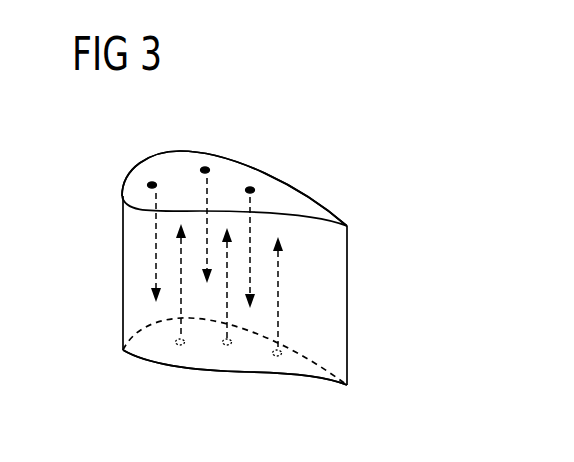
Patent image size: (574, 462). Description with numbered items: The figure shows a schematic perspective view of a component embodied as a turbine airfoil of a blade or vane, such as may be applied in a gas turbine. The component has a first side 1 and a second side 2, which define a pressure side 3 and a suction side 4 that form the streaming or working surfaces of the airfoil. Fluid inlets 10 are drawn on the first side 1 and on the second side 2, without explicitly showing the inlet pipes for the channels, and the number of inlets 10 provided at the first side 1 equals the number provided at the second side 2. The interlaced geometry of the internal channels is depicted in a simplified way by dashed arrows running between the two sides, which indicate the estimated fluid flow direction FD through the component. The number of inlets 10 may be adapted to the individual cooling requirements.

The first side 1 is at (290, 211).
The second side 2 is at (288, 377).
The pressure side 3 is at (248, 147).
The suction side 4 is at (196, 357).
The inlets 10 is at (251, 186).
The fluid flow direction FD is at (204, 192).